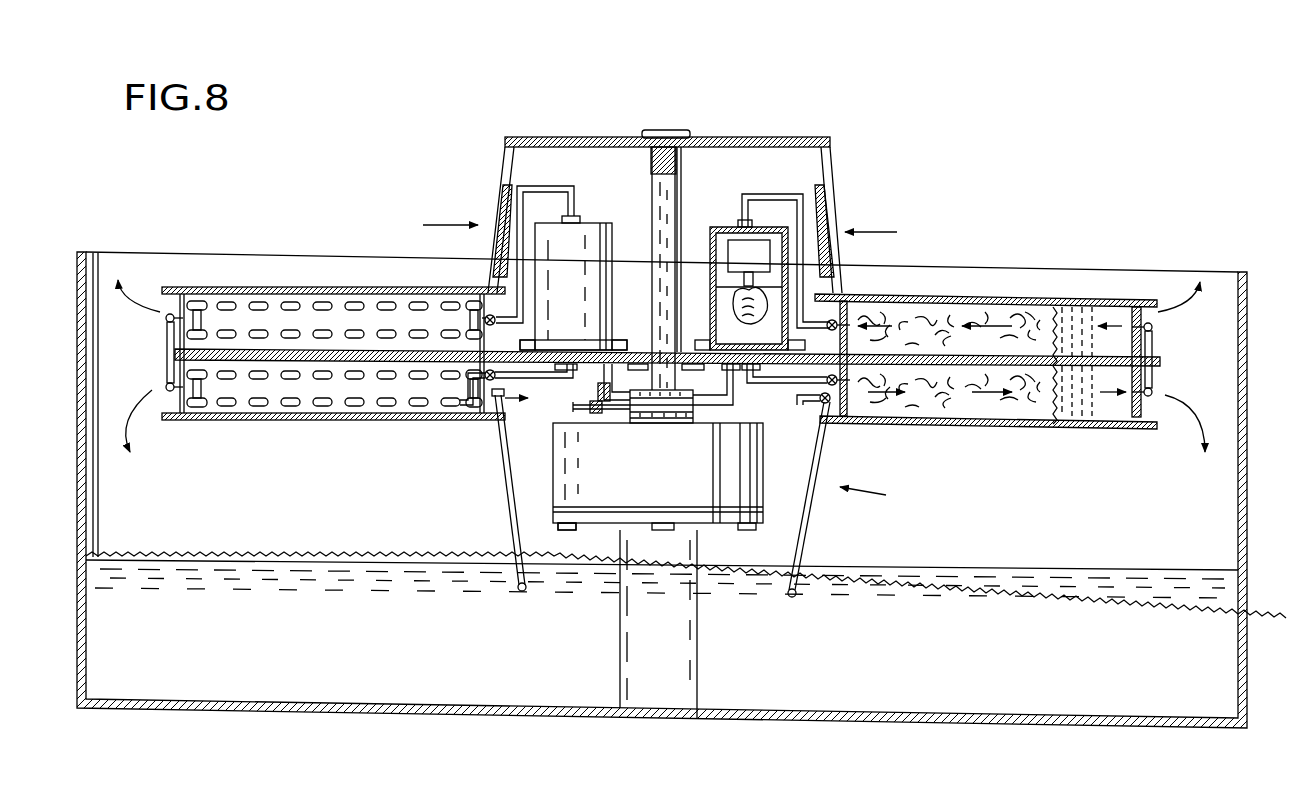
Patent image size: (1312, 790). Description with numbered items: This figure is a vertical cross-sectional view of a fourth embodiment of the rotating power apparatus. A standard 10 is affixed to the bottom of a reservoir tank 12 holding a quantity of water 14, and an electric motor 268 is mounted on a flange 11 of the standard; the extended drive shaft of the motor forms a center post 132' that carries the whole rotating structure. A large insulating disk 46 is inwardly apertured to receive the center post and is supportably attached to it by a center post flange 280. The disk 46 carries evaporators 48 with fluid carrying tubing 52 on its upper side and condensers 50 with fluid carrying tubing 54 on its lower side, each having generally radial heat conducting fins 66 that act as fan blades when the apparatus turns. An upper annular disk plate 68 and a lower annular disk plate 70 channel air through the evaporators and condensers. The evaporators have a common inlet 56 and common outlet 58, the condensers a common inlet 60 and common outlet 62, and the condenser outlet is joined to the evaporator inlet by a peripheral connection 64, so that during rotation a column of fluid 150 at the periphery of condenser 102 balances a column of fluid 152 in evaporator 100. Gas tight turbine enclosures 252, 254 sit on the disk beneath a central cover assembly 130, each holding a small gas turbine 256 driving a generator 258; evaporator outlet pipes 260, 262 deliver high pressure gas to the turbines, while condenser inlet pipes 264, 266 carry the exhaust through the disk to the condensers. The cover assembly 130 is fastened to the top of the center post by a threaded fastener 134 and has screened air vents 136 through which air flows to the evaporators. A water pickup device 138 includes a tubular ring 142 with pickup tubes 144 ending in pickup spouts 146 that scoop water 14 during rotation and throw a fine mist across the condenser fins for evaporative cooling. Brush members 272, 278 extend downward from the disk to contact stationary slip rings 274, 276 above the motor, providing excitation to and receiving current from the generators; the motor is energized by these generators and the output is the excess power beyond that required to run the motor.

The standard 10 is at (621, 655).
The flange 11 is at (592, 530).
The reservoir tank 12 is at (1247, 362).
The water 14 is at (1060, 562).
The disk 46 is at (248, 349).
The evaporators 48 is at (337, 327).
The condensers 50 is at (310, 380).
The fluid carrying tubing 52 is at (385, 331).
The fluid carrying tubing 54 is at (380, 406).
The common inlet 56 is at (188, 300).
The common outlet 58 is at (485, 317).
The common inlet 60 is at (476, 398).
The common outlet 62 is at (187, 407).
The peripheral connection 64 is at (168, 355).
The heat conducting fins 66 is at (213, 300).
The upper annular disk plate 68 is at (280, 287).
The lower annular disk plate 70 is at (251, 420).
The evaporator 100 is at (946, 306).
The condenser 102 is at (1010, 417).
The central cover assembly 130 is at (796, 137).
The center post 132' is at (639, 240).
The threaded fastener 134 is at (666, 130).
The air vents 136 is at (500, 225).
The water pickup device 138 is at (880, 494).
The tubular ring 142 is at (828, 405).
The pickup tubes 144 is at (512, 540).
The pickup spout 146 is at (519, 590).
The column of fluid 150 is at (1088, 422).
The column of fluid 152 is at (1076, 316).
The turbine enclosure 252 is at (756, 232).
The turbine enclosure 254 is at (601, 245).
The gas turbine 256 is at (837, 320).
The generator 258 is at (727, 260).
The evaporator outlet pipe 260 is at (776, 199).
The evaporator outlet pipe 262 is at (546, 192).
The condenser inlet pipe 264 is at (782, 388).
The condenser inlet pipe 266 is at (530, 380).
The electric motor 268 is at (748, 468).
The brush member 272 is at (612, 423).
The slip ring 274 is at (648, 425).
The slip ring 276 is at (672, 424).
The brush member 278 is at (690, 427).
The center post flange 280 is at (637, 310).